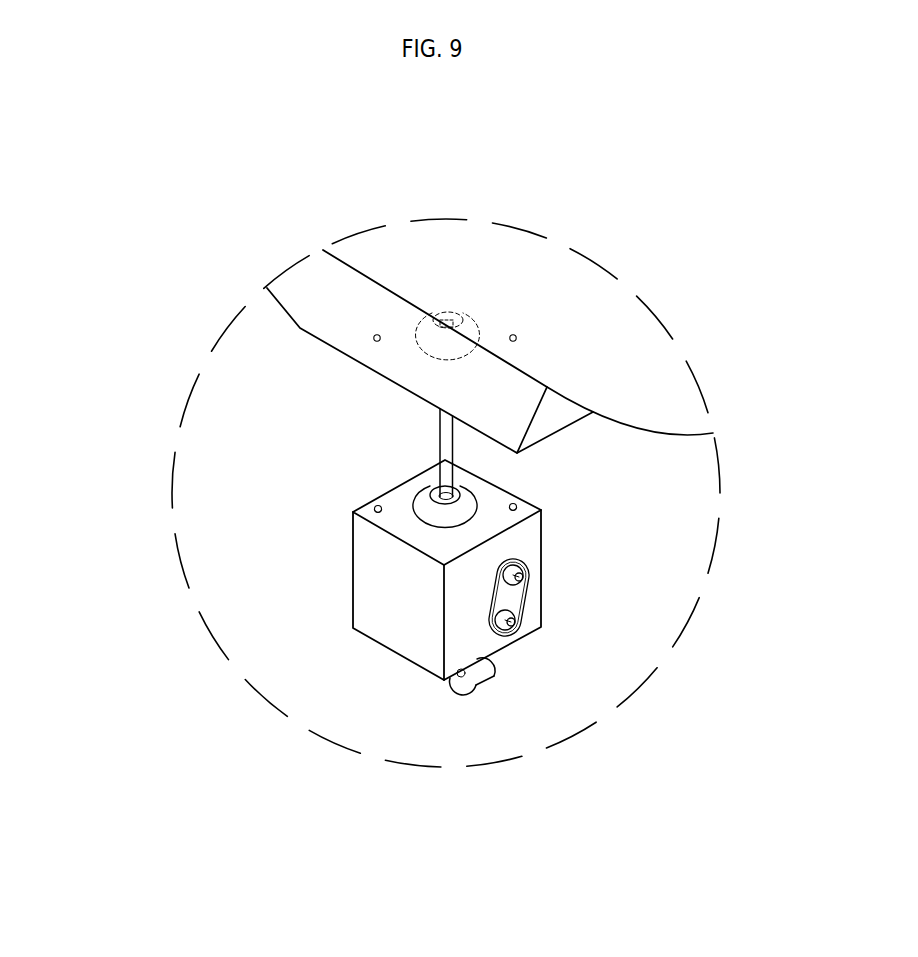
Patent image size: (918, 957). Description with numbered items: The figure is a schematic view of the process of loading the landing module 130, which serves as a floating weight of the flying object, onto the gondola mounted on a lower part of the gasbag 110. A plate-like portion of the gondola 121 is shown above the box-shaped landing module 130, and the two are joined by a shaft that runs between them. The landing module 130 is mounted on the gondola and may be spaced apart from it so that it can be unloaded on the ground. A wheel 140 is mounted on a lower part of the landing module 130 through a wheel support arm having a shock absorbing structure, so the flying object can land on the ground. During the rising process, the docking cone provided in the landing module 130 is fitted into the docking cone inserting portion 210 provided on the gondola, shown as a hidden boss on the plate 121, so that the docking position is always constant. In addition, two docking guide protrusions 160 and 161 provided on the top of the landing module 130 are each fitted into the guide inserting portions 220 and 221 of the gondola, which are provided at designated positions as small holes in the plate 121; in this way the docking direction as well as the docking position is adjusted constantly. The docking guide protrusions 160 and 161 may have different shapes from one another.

The gasbag 110 is at (615, 320).
The mounting plate 121 is at (313, 340).
The landing module 130 is at (350, 630).
The wheel 140 is at (480, 698).
The docking guide protrusion 160 is at (518, 505).
The docking guide protrusion 161 is at (375, 507).
The docking cone inserting portion 210 is at (424, 329).
The guide inserting portion 220 is at (514, 336).
The guide inserting portion 221 is at (377, 335).